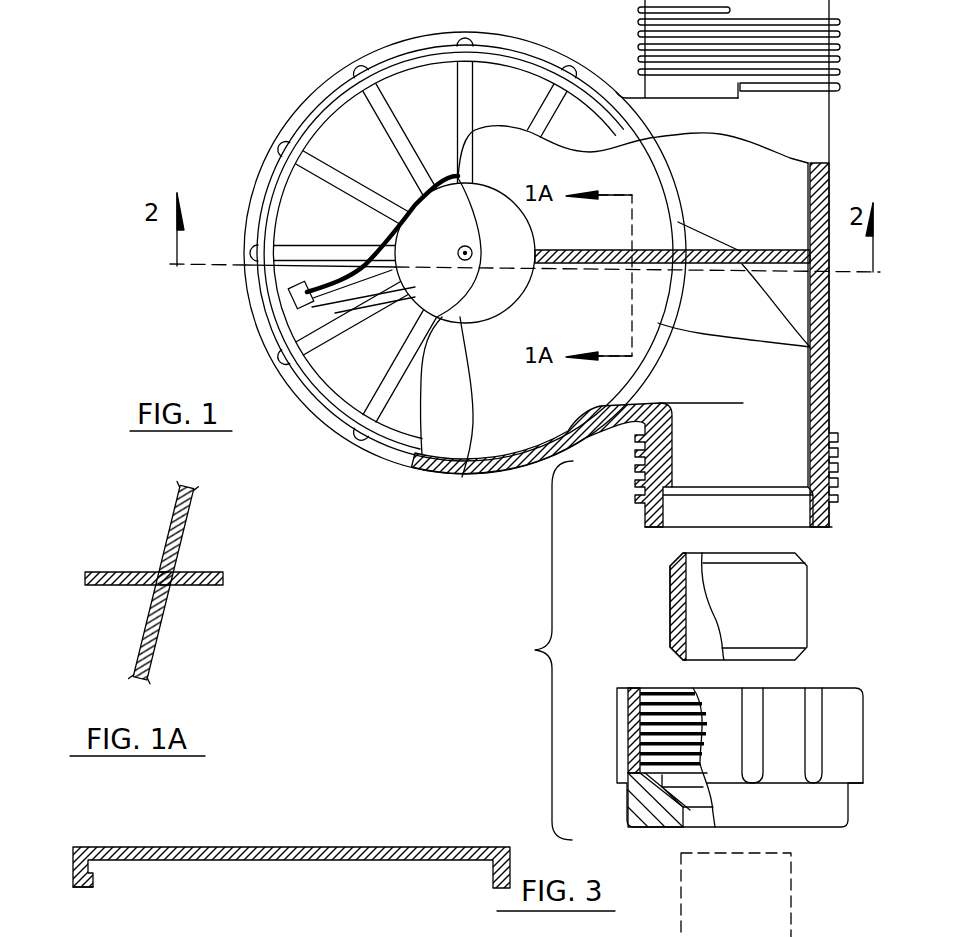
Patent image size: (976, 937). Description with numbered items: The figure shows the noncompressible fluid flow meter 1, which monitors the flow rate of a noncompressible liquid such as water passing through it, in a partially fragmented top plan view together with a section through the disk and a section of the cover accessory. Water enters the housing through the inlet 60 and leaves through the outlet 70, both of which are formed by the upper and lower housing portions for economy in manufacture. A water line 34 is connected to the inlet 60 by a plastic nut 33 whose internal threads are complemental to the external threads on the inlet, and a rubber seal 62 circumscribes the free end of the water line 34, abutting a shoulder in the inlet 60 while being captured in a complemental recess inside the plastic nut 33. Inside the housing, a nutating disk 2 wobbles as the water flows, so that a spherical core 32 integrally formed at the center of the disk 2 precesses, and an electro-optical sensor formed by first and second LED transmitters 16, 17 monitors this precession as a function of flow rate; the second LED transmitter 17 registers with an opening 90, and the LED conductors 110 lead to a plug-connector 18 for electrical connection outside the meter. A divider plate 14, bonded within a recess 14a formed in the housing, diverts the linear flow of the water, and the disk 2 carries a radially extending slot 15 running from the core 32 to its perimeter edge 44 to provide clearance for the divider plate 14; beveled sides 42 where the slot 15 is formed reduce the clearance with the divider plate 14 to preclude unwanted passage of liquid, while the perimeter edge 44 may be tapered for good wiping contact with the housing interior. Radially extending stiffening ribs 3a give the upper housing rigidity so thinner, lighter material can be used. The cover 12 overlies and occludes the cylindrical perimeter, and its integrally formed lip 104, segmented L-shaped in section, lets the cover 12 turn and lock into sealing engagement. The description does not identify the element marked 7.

In FIG. 1, the noncompressible fluid flow meter 1 is at (535, 650).
In FIG. 1, the nutating disk 2 is at (507, 443).
In FIG. 1A, the nutating disk 2 is at (180, 503).
In FIG. 1, the stiffening ribs 3a is at (392, 80).
In FIG. 3, the fitting 7 is at (349, 913).
In FIG. 3, the cover 12 is at (315, 861).
In FIG. 1, the divider plate 14 is at (818, 297).
In FIG. 1A, the divider plate 14 is at (105, 572).
In FIG. 1, the recess 14a is at (830, 243).
In FIG. 1A, the slot 15 is at (165, 572).
In FIG. 1, the first LED transmitter 16 is at (285, 343).
In FIG. 3, the second LED transmitter 17 is at (436, 927).
In FIG. 1, the plug-connector 18 is at (292, 298).
In FIG. 1, the spherical core 32 is at (462, 477).
In FIG. 1, the plastic nut 33 is at (633, 708).
In FIG. 3, the water line 34 is at (794, 911).
In FIG. 1A, the beveled sides 42 is at (165, 586).
In FIG. 1, the perimeter edge 44 is at (810, 347).
In FIG. 1, the inlet 60 is at (724, 467).
In FIG. 1, the rubber seal 62 is at (672, 600).
In FIG. 1, the outlet 70 is at (752, 182).
In FIG. 3, the opening 90 is at (345, 912).
In FIG. 3, the lip 104 is at (97, 881).
In FIG. 1, the conductors 110 is at (357, 272).